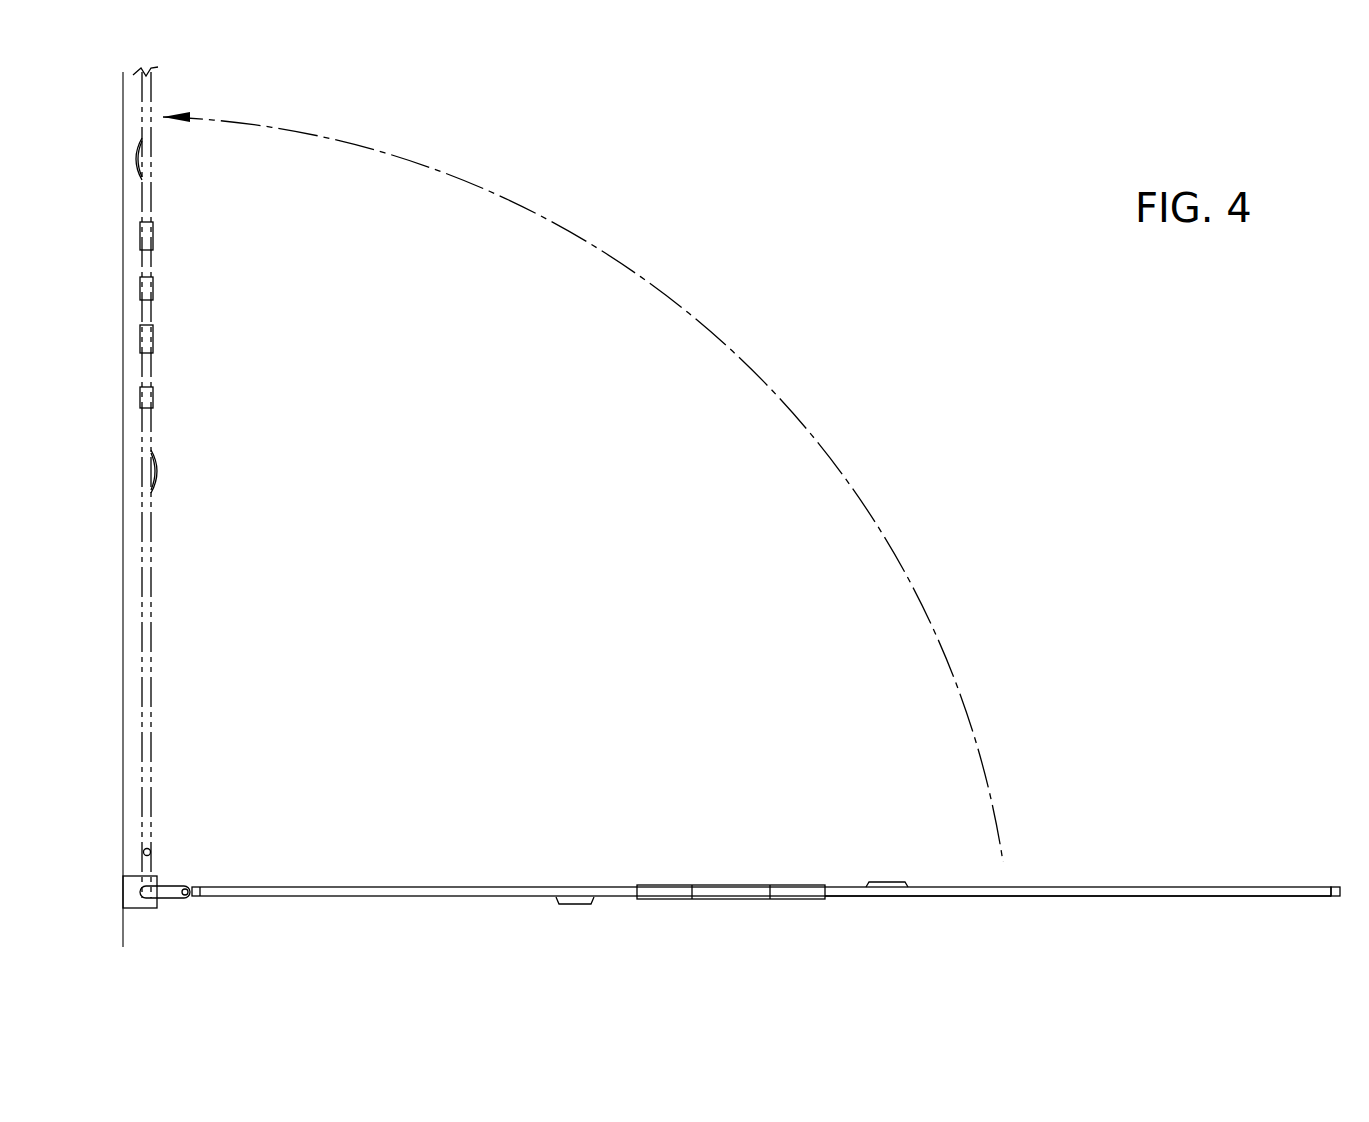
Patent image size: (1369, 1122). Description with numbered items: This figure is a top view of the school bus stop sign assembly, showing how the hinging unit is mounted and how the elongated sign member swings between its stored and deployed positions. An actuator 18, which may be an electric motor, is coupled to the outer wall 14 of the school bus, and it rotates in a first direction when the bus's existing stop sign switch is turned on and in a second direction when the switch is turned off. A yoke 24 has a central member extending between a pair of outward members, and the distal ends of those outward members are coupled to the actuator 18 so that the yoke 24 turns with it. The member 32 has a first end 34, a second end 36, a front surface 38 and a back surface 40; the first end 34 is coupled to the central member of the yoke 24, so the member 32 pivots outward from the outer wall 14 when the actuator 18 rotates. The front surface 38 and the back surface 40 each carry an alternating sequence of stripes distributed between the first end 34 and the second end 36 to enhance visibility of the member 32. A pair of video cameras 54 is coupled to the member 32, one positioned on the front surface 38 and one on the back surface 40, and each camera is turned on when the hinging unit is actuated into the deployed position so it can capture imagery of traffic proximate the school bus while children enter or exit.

The outer wall 14 is at (112, 738).
The actuator 18 is at (140, 910).
The yoke 24 is at (172, 887).
The member 32 is at (520, 898).
The first end 34 is at (186, 897).
The second end 36 is at (1342, 888).
The front surface 38 is at (1125, 896).
The back surface 40 is at (1062, 892).
The video cameras 54 is at (580, 905).